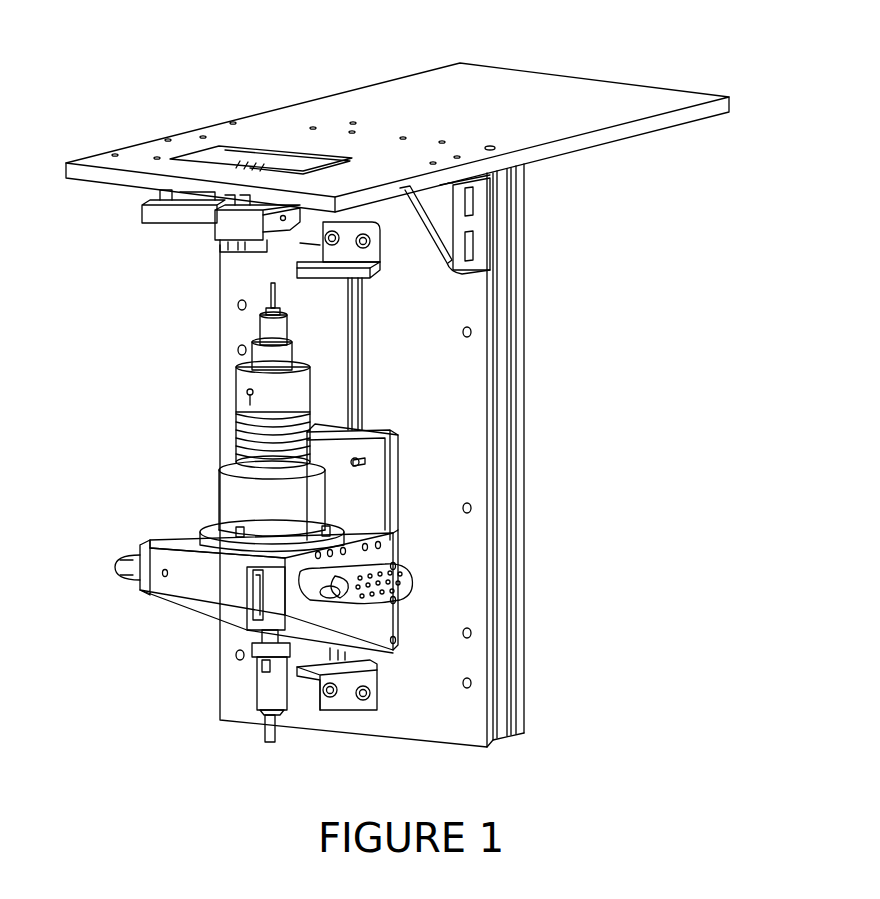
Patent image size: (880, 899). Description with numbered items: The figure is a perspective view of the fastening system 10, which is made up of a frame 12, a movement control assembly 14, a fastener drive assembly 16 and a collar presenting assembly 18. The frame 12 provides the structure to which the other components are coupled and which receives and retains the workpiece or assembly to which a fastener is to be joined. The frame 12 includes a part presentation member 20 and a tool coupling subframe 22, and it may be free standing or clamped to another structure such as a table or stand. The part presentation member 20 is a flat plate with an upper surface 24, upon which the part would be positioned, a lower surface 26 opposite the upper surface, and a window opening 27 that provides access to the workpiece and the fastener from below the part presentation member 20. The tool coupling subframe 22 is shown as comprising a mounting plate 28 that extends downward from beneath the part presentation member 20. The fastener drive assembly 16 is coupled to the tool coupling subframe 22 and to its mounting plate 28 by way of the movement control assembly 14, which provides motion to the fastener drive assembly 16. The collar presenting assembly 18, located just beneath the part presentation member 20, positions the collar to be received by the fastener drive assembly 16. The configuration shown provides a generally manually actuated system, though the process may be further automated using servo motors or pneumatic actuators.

The fastening system 10 is at (321, 72).
The frame 12 is at (538, 415).
The movement control assembly 14 is at (385, 343).
The fastener drive assembly 16 is at (192, 489).
The collar presenting assembly 18 is at (167, 224).
The part presentation member 20 is at (483, 72).
The tool coupling subframe 22 is at (518, 453).
The upper surface 24 is at (587, 97).
The lower surface 26 is at (665, 128).
The window opening 27 is at (232, 168).
The mounting plate 28 is at (468, 488).